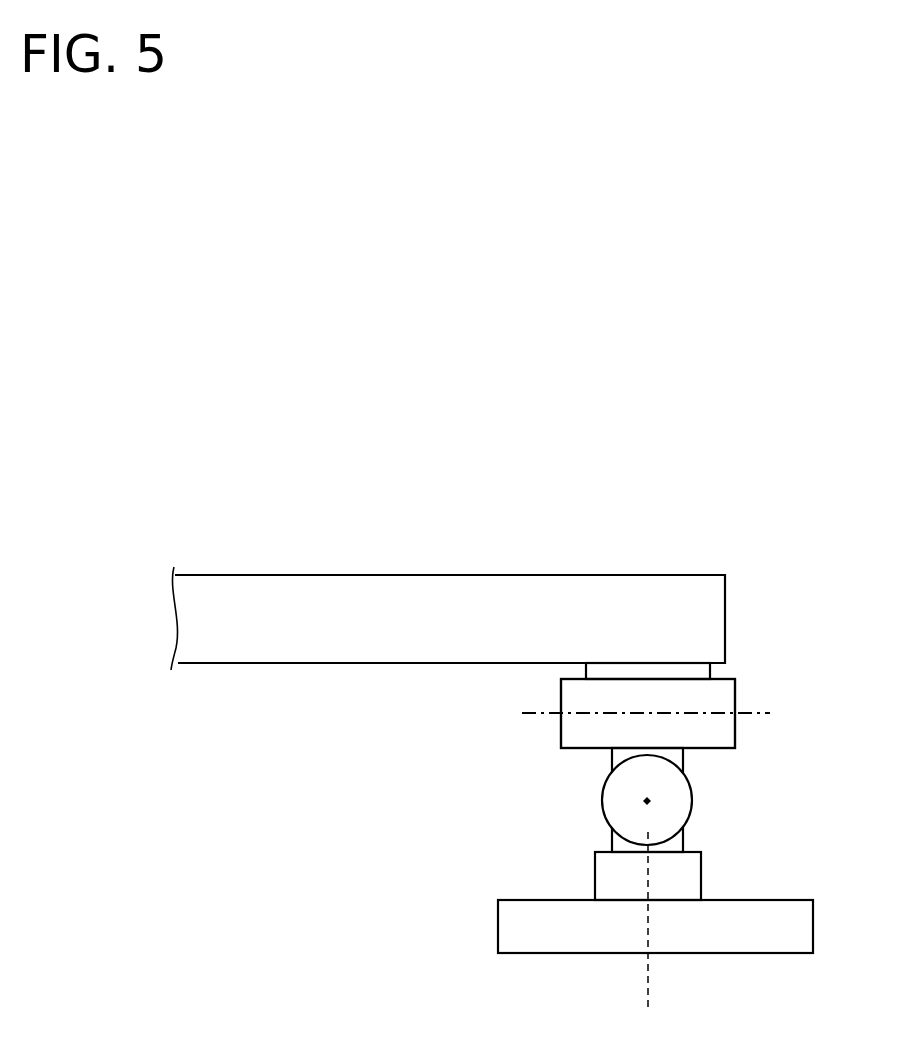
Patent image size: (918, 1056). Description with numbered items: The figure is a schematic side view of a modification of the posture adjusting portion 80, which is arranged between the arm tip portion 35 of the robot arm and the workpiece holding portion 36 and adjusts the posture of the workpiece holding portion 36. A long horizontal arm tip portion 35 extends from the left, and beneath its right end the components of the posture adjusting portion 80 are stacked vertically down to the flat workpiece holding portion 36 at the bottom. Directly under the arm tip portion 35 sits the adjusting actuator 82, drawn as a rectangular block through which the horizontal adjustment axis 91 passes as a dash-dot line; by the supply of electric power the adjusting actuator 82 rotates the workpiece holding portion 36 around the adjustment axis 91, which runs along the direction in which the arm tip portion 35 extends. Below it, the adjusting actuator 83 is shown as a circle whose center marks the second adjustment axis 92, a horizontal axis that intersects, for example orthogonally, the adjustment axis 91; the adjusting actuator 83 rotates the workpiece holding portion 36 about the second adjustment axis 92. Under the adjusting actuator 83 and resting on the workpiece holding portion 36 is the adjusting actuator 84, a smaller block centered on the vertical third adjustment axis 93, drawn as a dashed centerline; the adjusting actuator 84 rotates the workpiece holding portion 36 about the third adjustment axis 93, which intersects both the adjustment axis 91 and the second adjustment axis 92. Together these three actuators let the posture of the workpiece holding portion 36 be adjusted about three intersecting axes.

The arm tip portion 35 is at (320, 586).
The workpiece holding portion 36 is at (807, 927).
The posture adjusting portion 80 is at (753, 659).
The adjusting actuator 82 is at (729, 733).
The adjusting actuator 83 is at (683, 799).
The adjusting actuator 84 is at (693, 871).
The adjustment axis 91 is at (757, 714).
The second adjustment axis 92 is at (645, 801).
The third adjustment axis 93 is at (648, 993).